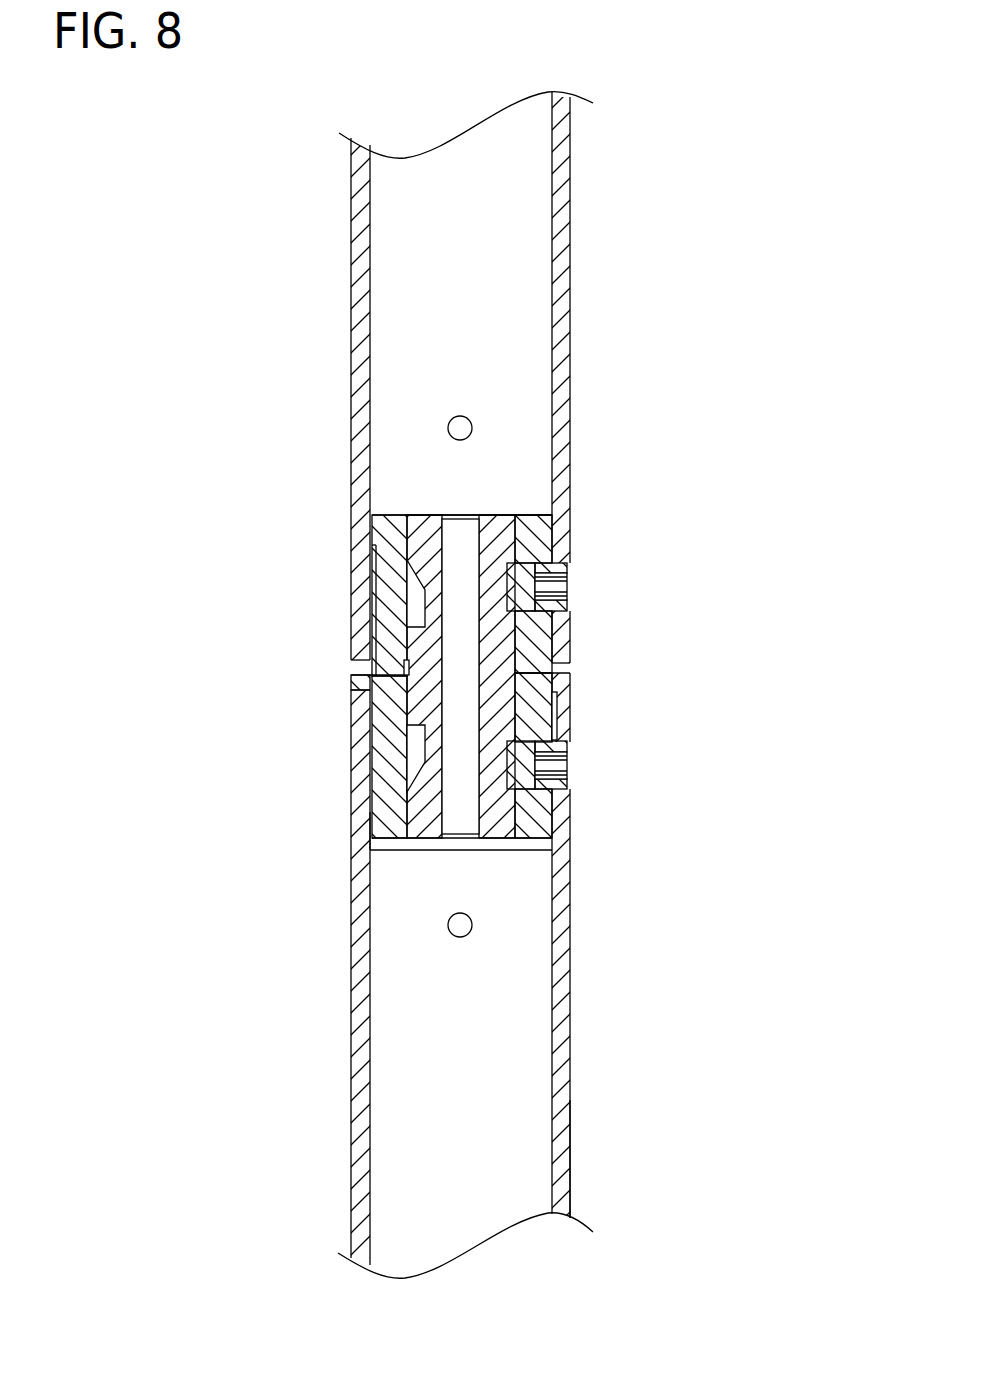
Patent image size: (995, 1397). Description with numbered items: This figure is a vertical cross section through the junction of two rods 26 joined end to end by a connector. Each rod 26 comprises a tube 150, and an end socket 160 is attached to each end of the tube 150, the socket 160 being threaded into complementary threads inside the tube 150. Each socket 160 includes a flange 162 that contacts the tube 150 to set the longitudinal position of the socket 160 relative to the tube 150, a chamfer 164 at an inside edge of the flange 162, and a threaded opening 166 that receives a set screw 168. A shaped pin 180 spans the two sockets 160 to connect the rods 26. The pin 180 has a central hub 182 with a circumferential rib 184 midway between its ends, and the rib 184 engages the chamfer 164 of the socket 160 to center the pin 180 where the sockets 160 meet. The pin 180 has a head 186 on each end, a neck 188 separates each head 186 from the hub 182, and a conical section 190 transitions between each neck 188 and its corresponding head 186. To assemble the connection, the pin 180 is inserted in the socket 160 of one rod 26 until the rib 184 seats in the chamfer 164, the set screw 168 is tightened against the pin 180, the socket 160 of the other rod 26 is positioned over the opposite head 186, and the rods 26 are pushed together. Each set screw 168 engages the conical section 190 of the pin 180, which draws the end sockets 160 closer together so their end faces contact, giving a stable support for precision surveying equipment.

The rod 26 is at (578, 248).
The tube 150 is at (570, 1152).
The end socket 160 is at (563, 515).
The flange 162 is at (570, 672).
The chamfer 164 is at (405, 672).
The threaded opening 166 is at (567, 597).
The set screw 168 is at (567, 565).
The shaped pin 180 is at (495, 512).
The central hub 182 is at (424, 728).
The circumferential rib 184 is at (410, 700).
The head 186 is at (393, 515).
The neck 188 is at (407, 605).
The conical section 190 is at (372, 566).